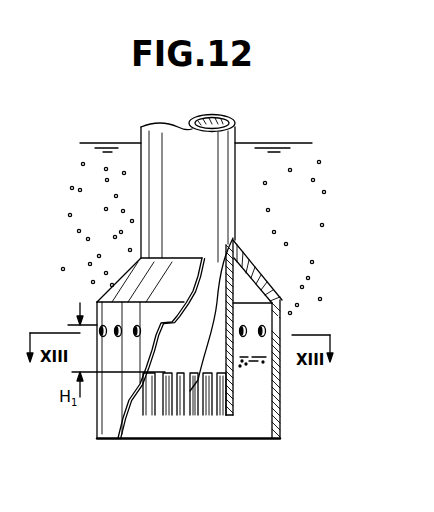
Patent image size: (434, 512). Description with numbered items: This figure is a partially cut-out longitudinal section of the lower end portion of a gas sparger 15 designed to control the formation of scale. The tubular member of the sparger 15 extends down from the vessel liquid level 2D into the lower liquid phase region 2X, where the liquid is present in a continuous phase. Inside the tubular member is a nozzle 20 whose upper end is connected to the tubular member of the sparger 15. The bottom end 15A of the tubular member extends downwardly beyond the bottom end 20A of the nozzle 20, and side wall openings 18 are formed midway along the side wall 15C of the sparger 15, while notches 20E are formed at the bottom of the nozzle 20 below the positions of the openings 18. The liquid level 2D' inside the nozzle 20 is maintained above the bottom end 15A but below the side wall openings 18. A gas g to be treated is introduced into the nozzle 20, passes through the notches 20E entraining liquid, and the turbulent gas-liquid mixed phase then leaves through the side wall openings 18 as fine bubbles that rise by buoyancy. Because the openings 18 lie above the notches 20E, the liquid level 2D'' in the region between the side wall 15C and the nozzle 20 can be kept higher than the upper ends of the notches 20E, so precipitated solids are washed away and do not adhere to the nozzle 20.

The gas sparger 15 is at (242, 191).
The bottom end of the tubular member 15A is at (280, 440).
The side wall 15C is at (282, 417).
The side wall openings 18 is at (135, 326).
The nozzle 20 is at (256, 371).
The bottom end of the nozzle 20A is at (226, 416).
The notches 20E is at (182, 410).
The liquid level 2D is at (197, 121).
The liquid level in the nozzle 2D' is at (215, 451).
The liquid level of the region surrounded by the side wall and nozzle 2D'' is at (284, 309).
The liquid phase region 2X is at (306, 231).
The gas to be treated g is at (204, 84).